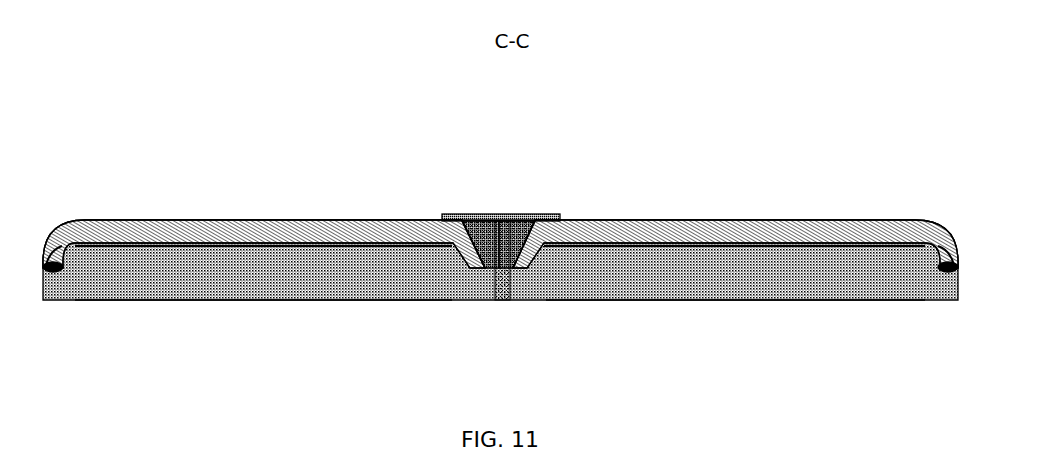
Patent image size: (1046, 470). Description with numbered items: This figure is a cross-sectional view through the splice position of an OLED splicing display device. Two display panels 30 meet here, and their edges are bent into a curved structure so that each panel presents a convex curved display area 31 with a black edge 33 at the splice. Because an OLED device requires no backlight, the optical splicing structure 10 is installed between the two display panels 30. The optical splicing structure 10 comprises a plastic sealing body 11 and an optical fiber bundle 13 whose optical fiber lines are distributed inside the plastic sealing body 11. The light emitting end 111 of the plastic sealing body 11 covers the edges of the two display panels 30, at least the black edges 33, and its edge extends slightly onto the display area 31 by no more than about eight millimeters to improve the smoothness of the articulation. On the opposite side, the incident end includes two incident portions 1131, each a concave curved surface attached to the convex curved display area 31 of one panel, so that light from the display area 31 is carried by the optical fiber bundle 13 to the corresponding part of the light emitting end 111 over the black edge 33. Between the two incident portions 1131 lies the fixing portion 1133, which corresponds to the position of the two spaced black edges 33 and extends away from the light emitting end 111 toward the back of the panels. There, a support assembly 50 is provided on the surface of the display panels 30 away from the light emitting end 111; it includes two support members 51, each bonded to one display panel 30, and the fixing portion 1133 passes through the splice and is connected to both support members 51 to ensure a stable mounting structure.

The optical splicing structure 10 is at (527, 175).
The plastic sealing body 11 is at (508, 250).
The optical fiber bundle 13 is at (496, 240).
The light emitting end 111 is at (468, 265).
The incident portion 1131 is at (514, 264).
The fixing portion 1133 is at (503, 292).
The display panel 30 is at (500, 186).
The display area 31 is at (322, 225).
The black edge 33 is at (477, 270).
The support assembly 50 is at (264, 313).
The support member 51 is at (413, 280).